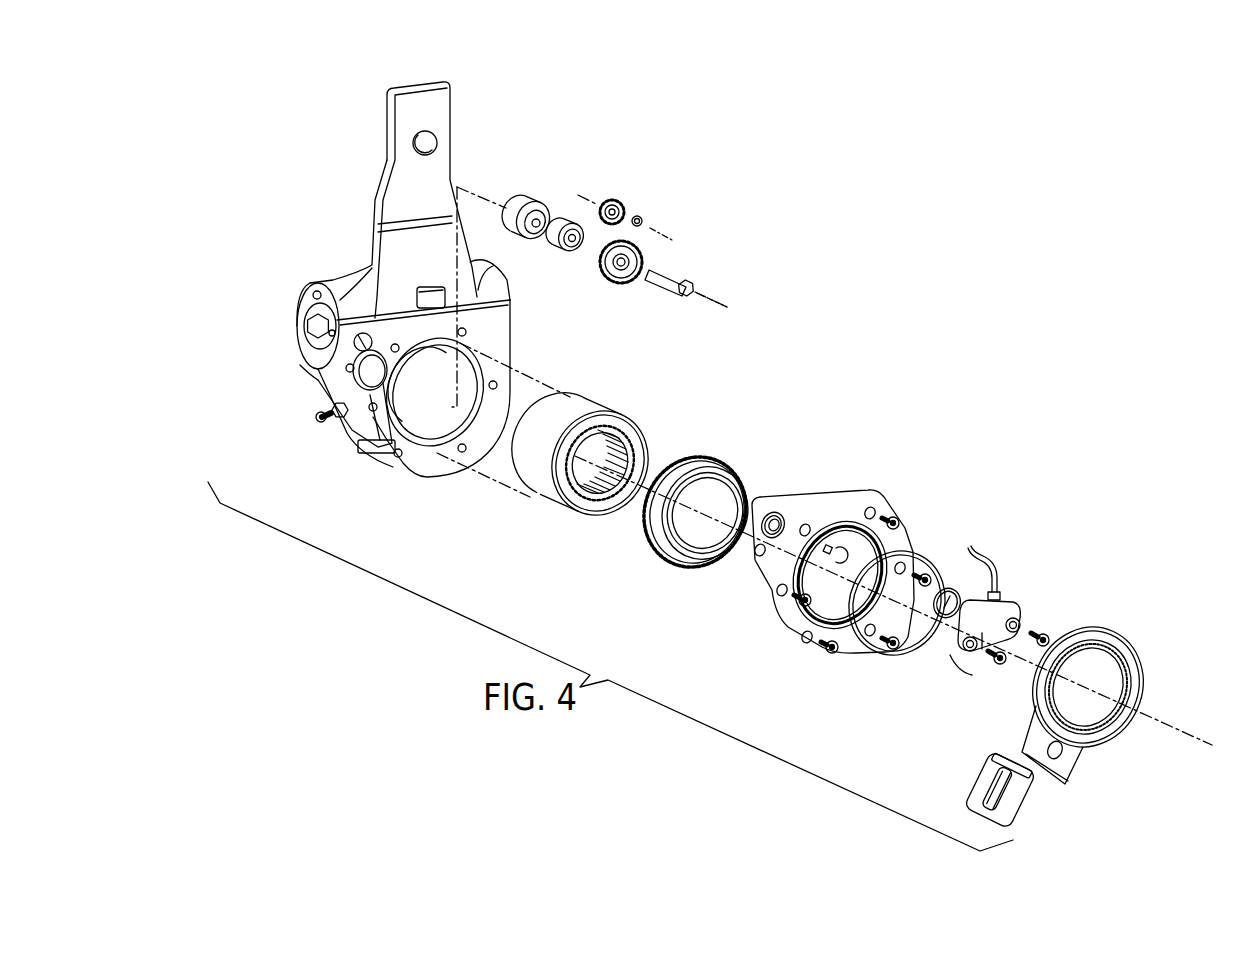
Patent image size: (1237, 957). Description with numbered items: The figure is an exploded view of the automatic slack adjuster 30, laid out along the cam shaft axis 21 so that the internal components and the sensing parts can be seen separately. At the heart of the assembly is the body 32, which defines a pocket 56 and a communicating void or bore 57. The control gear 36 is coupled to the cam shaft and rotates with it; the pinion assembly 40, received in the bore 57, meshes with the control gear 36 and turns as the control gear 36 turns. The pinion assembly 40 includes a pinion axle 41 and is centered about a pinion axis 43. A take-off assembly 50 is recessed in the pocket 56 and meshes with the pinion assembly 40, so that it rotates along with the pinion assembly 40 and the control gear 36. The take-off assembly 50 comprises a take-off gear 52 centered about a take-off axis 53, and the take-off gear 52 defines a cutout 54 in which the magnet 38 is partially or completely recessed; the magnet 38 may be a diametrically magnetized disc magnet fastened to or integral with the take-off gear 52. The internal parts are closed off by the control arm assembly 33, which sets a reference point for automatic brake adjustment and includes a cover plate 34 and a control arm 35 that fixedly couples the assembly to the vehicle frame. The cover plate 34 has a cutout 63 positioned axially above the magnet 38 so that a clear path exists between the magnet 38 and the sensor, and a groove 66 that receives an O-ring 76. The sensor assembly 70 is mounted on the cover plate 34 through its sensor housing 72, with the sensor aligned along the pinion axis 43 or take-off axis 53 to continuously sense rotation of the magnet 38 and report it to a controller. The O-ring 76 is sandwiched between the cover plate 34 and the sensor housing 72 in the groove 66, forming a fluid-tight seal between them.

The cam shaft axis 21 is at (1163, 720).
The slack adjuster 30 is at (810, 222).
The body 32 is at (431, 166).
The control arm assembly 33 is at (1055, 523).
The cover plate 34 is at (828, 505).
The control arm 35 is at (1018, 800).
The control gear 36 is at (610, 507).
The magnet 38 is at (640, 226).
The pinion assembly 40 is at (583, 268).
The pinion axle 41 is at (663, 287).
The pinion axis 43 is at (712, 300).
The take-off assembly 50 is at (630, 199).
The take-off gear 52 is at (613, 202).
The take-off axis 53 is at (660, 232).
The cutout 54 is at (624, 215).
The pocket 56 is at (356, 347).
The bore 57 is at (378, 453).
The cutout 63 is at (752, 538).
The groove 66 is at (771, 526).
The sensor assembly 70 is at (1039, 612).
The sensor housing 72 is at (983, 638).
The O-ring 76 is at (945, 590).